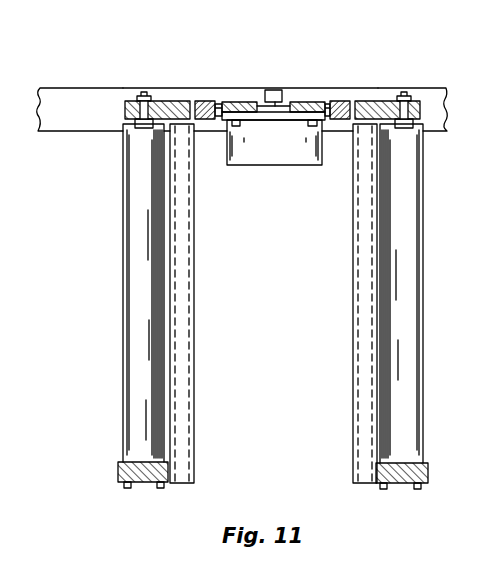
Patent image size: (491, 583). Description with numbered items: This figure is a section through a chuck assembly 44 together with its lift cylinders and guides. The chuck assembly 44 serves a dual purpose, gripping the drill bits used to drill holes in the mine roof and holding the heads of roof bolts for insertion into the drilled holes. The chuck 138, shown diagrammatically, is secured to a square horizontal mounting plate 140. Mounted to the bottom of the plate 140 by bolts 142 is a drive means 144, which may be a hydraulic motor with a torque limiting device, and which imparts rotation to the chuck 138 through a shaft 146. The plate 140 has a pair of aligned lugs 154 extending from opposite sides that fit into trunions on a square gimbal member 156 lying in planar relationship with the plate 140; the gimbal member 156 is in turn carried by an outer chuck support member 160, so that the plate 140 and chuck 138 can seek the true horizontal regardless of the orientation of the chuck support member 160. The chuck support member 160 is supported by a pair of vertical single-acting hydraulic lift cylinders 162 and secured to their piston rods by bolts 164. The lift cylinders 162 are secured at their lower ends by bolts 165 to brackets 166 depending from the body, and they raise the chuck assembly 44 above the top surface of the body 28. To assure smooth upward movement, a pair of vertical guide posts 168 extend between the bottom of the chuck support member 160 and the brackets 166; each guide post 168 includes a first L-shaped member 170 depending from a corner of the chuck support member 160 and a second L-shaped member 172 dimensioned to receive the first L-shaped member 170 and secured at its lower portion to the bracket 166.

The body 28 is at (384, 88).
The chuck assembly 44 is at (289, 96).
The chuck 138 is at (274, 90).
The mounting plate 140 is at (247, 101).
The bolts 142 is at (232, 124).
The drive means 144 is at (283, 165).
The shaft 146 is at (278, 112).
The lugs 154 is at (212, 103).
The gimbal member 156 is at (200, 100).
The chuck support member 160 is at (176, 101).
The lift cylinders 162 is at (123, 197).
The bolts 164 is at (139, 92).
The bolts 165 is at (151, 500).
The brackets 166 is at (118, 468).
The guide posts 168 is at (197, 253).
The first L-shaped member 170 is at (195, 283).
The second L-shaped member 172 is at (194, 320).